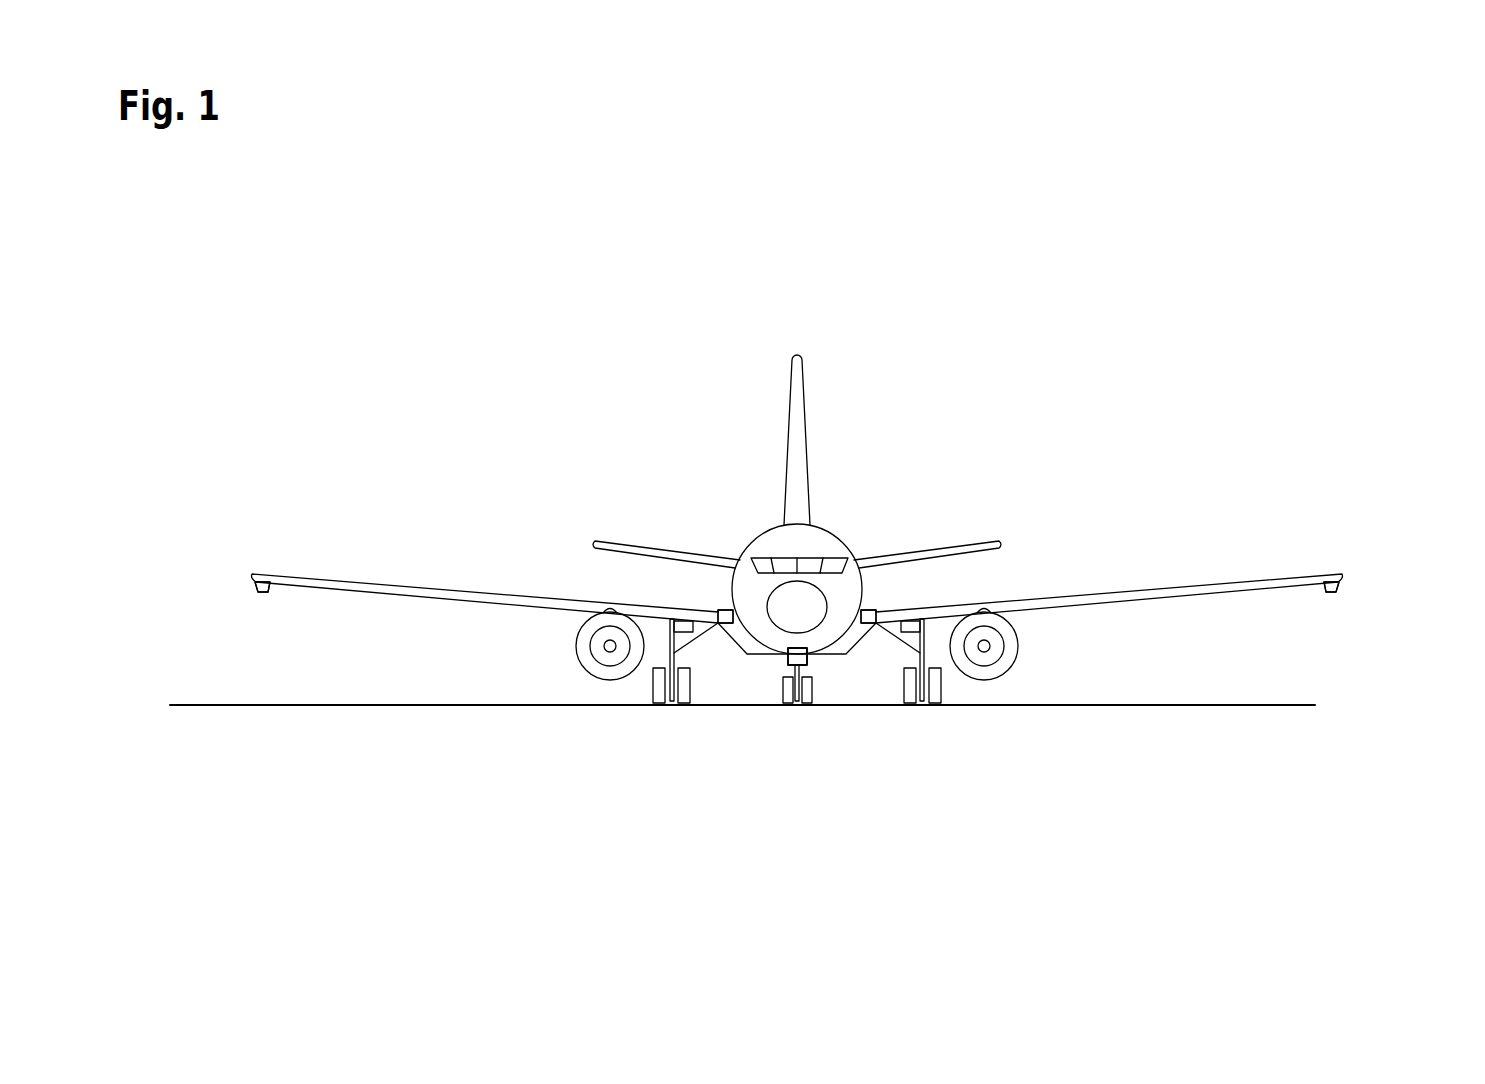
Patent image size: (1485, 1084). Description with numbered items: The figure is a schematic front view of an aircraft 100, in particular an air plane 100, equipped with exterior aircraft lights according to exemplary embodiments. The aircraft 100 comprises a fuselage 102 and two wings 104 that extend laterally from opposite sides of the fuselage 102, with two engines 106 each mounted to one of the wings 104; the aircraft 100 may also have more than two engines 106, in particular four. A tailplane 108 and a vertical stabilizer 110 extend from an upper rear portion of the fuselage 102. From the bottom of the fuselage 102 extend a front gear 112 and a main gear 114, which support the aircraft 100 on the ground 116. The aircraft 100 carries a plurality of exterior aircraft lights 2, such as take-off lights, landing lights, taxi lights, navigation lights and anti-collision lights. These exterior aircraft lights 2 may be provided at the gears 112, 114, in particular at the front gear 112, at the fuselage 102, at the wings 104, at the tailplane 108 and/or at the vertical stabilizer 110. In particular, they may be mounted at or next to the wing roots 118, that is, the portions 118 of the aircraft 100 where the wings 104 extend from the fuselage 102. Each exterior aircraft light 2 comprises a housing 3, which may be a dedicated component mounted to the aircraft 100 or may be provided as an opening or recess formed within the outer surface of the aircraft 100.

The aircraft 100 is at (1154, 297).
The fuselage 102 is at (828, 539).
The wings 104 is at (283, 521).
The engines 106 is at (567, 660).
The tailplane 108 is at (693, 531).
The vertical stabilizer 110 is at (820, 399).
The front gear 112 is at (799, 718).
The main gear 114 is at (636, 693).
The ground 116 is at (379, 706).
The wing roots 118 is at (722, 650).
The exterior aircraft lights 2 is at (728, 610).
The housing 3 is at (699, 611).